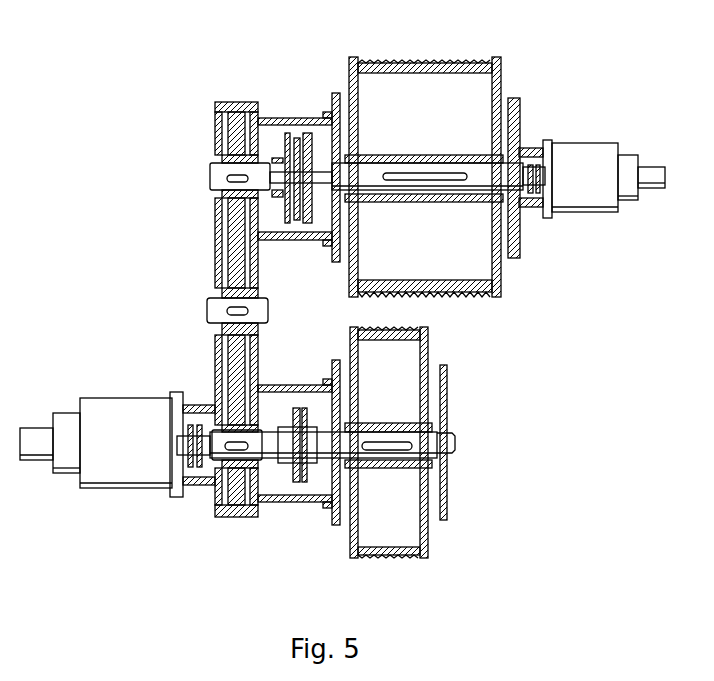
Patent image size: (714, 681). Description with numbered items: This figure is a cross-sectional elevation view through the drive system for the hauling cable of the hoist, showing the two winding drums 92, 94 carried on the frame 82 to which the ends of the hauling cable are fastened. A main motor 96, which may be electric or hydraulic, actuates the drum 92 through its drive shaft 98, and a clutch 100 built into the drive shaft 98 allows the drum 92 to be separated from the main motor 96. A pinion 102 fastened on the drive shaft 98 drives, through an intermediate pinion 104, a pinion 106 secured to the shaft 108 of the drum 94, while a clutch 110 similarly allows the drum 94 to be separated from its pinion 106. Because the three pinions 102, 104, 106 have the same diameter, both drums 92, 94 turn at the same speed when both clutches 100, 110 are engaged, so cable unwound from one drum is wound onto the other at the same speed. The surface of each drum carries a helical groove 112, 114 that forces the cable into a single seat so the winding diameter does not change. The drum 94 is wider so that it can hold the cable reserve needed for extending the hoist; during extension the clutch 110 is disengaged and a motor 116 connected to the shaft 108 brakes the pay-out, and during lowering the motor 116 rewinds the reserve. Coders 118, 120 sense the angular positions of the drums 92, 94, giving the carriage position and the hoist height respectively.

The frame 82 is at (522, 108).
The winding drum 92 is at (396, 385).
The winding drum 94 is at (432, 121).
The main motor 96 is at (125, 475).
The drive shaft 98 is at (330, 450).
The clutch 100 is at (296, 475).
The pinion 102 is at (230, 492).
The intermediate pinion 104 is at (232, 268).
The pinion 106 is at (232, 213).
The shaft 108 is at (213, 176).
The clutch 110 is at (300, 133).
The helical groove 112 is at (383, 556).
The helical groove 114 is at (418, 62).
The motor 116 is at (581, 148).
The coder 118 is at (40, 445).
The coder 120 is at (648, 170).